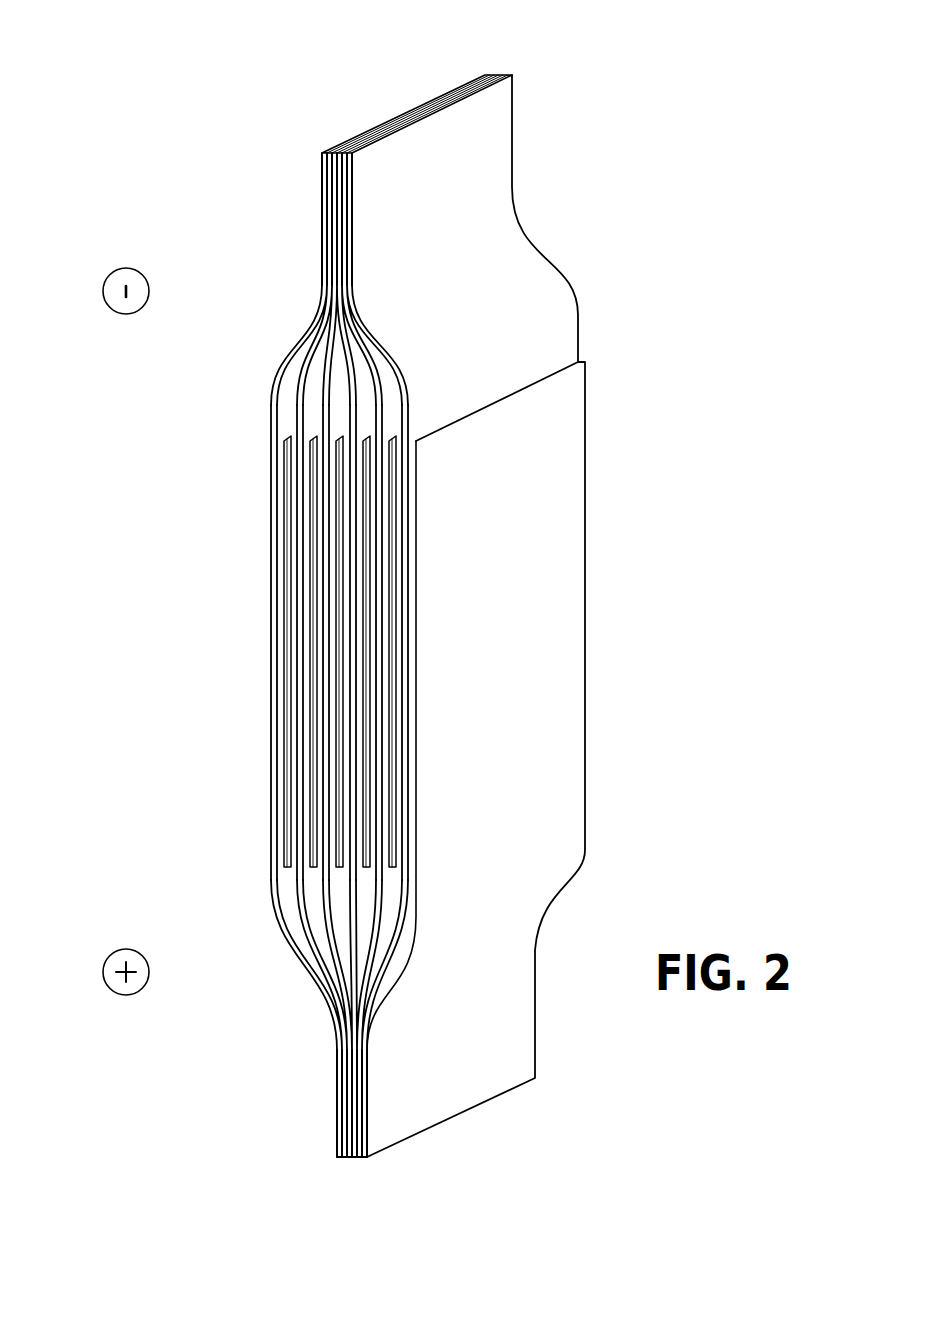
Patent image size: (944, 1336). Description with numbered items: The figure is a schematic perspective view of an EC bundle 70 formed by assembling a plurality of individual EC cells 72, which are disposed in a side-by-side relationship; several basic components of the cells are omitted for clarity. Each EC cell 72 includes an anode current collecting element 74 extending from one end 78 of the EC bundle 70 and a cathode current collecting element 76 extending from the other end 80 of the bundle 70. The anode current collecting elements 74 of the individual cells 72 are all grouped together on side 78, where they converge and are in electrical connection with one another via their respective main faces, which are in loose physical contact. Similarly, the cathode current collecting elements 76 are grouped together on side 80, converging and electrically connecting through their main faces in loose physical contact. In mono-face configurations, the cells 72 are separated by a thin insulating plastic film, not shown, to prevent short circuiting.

The EC bundle 70 is at (132, 122).
The EC cell 72 is at (276, 563).
The anode current collecting element 74 is at (406, 405).
The cathode current collecting element 76 is at (410, 938).
The end of the EC bundle 78 is at (586, 33).
The other end of the EC bundle 80 is at (210, 873).